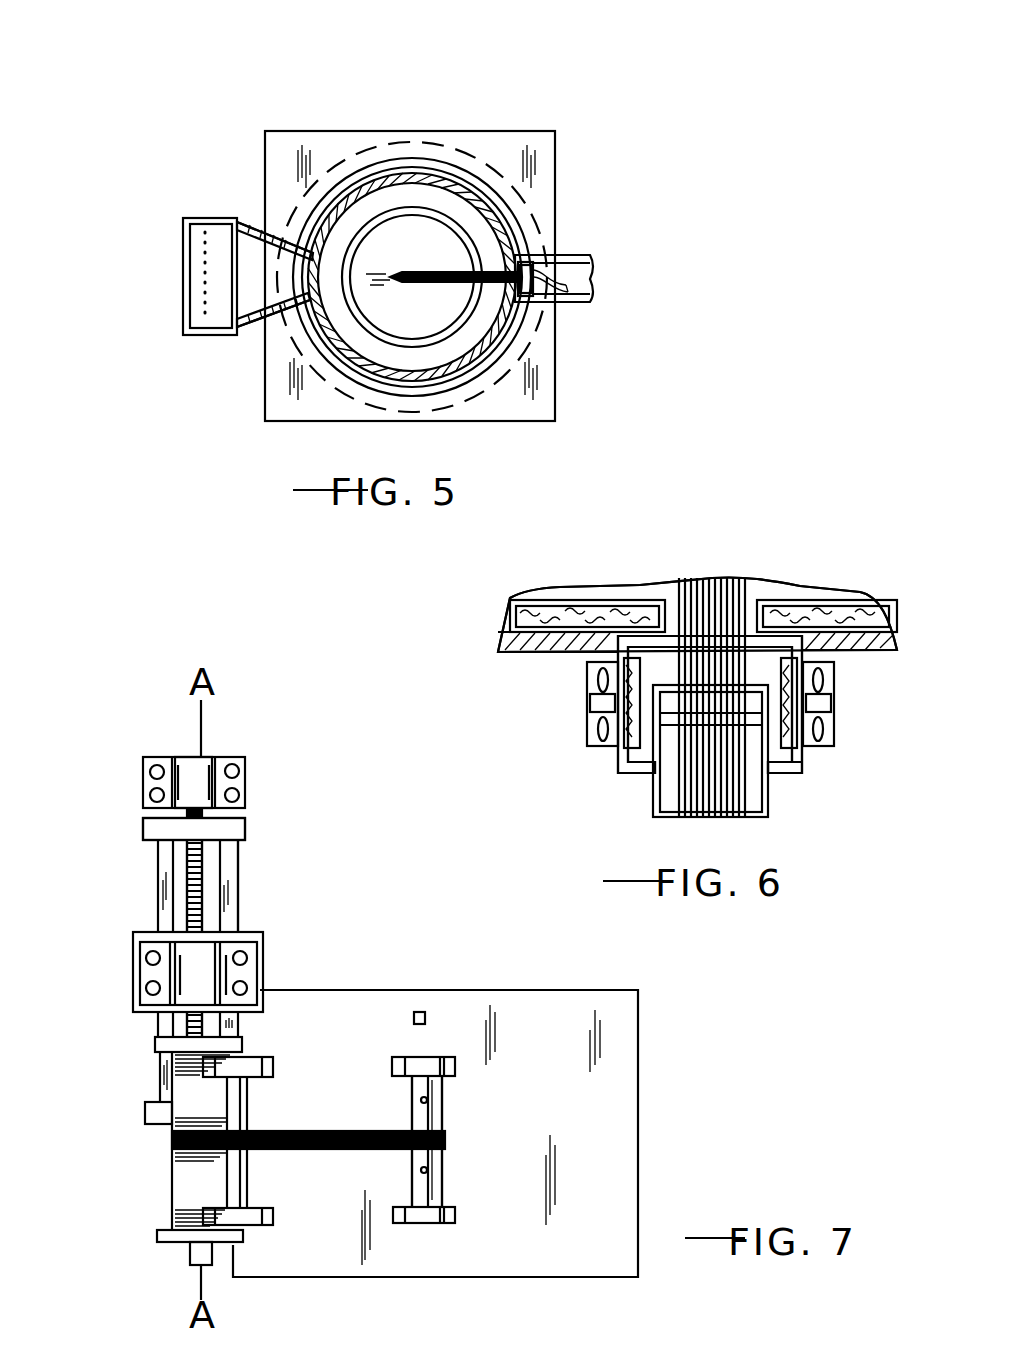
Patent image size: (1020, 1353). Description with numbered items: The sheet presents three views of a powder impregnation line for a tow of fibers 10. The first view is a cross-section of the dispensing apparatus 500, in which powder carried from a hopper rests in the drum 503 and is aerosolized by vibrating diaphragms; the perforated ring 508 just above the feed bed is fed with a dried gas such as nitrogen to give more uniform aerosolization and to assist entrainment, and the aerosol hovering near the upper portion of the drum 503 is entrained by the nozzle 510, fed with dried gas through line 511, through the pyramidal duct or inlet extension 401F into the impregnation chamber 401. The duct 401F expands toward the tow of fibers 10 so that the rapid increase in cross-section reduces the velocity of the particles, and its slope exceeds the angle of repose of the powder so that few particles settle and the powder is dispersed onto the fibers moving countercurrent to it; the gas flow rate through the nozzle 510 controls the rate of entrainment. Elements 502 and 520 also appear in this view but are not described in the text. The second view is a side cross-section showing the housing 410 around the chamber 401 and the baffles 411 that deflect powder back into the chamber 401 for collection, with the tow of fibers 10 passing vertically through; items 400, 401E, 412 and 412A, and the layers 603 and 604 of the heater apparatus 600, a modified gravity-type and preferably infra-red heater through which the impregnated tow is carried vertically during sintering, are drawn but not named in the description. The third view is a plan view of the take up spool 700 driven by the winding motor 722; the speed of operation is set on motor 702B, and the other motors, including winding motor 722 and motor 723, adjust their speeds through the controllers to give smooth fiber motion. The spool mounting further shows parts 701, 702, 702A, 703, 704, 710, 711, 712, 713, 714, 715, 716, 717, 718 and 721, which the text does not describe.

In FIG. 5, the tow of fibers 10 is at (190, 280).
In FIG. 6, the tow of fibers 10 is at (705, 597).
In FIG. 7, the tow of fibers 10 is at (368, 1128).
In FIG. 6, the cable clamp assembly 400 is at (848, 780).
In FIG. 5, the chamber 401 is at (207, 335).
In FIG. 6, the chamber 401 is at (650, 800).
In FIG. 6, the clamp block edge 401E is at (758, 690).
In FIG. 5, the inlet extension 401F is at (248, 230).
In FIG. 6, the housing 410 is at (622, 772).
In FIG. 6, the baffles 411 is at (780, 782).
In FIG. 6, the bearing 412 is at (828, 745).
In FIG. 6, the bearing retainer plate 412A is at (795, 680).
In FIG. 5, the dispensing apparatus 500 is at (566, 185).
In FIG. 5, the mounting plate 502 is at (560, 375).
In FIG. 5, the drum 503 is at (478, 150).
In FIG. 5, the ring 508 is at (375, 215).
In FIG. 5, the nozzle 510 is at (448, 268).
In FIG. 5, the line 511 is at (552, 260).
In FIG. 5, the connector body 520 is at (582, 302).
In FIG. 6, the heater apparatus 600 is at (612, 578).
In FIG. 7, the heater apparatus 600 is at (640, 1082).
In FIG. 6, the plate layer 603 is at (515, 650).
In FIG. 6, the insulation layer 604 is at (548, 613).
In FIG. 7, the take up spool 700 is at (172, 1160).
In FIG. 7, the post 701 is at (252, 1110).
In FIG. 7, the support post 702 is at (442, 1190).
In FIG. 7, the post portion 702A is at (443, 1115).
In FIG. 7, the motor 702B is at (425, 1065).
In FIG. 7, the flange 703 is at (425, 1060).
In FIG. 7, the flange 704 is at (250, 1068).
In FIG. 7, the vertical adjustment assembly 710 is at (245, 920).
In FIG. 7, the threaded rod 711 is at (200, 875).
In FIG. 7, the guide column 712 is at (157, 880).
In FIG. 7, the plate 713 is at (240, 876).
In FIG. 7, the top plate 714 is at (240, 833).
In FIG. 7, the stop block 715 is at (145, 1115).
In FIG. 7, the slide block 716 is at (258, 975).
In FIG. 7, the bolt hole 717 is at (157, 765).
In FIG. 7, the top block 718 is at (148, 785).
In FIG. 7, the bolt hole 721 is at (150, 950).
In FIG. 7, the winding motor 722 is at (142, 972).
In FIG. 7, the motor 723 is at (200, 775).